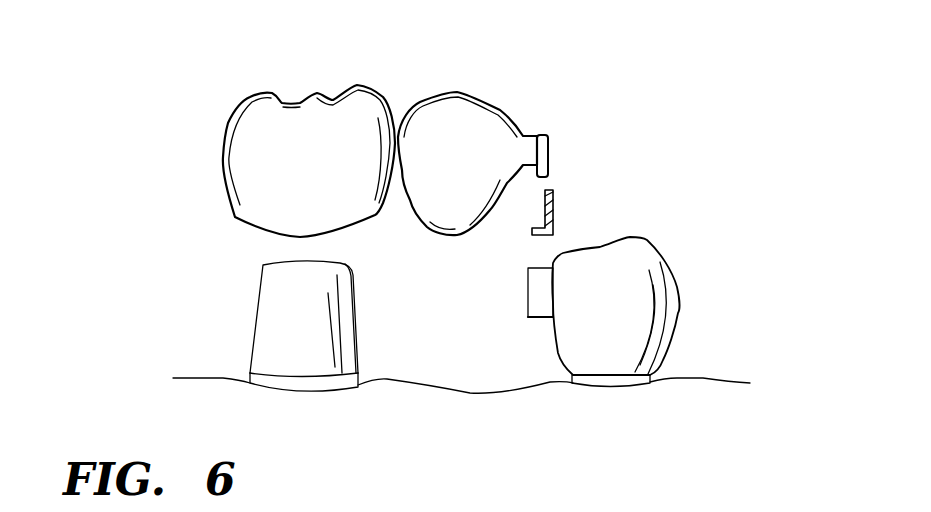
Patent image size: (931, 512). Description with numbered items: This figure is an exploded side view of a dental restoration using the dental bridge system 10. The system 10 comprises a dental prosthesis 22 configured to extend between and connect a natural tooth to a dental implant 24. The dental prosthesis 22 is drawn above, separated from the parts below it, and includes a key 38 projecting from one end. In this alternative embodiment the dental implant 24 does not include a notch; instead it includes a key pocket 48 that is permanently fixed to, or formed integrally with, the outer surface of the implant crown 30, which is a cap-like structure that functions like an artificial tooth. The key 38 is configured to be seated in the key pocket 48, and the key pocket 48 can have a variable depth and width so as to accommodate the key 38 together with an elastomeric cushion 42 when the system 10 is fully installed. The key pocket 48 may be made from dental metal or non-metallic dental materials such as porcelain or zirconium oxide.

The dental bridge system 10 is at (637, 95).
The dental prosthesis 22 is at (388, 60).
The dental implant 24 is at (631, 312).
The implant crown 30 is at (638, 268).
The key 38 is at (538, 133).
The elastomeric cushion 42 is at (555, 202).
The key pocket 48 is at (528, 290).